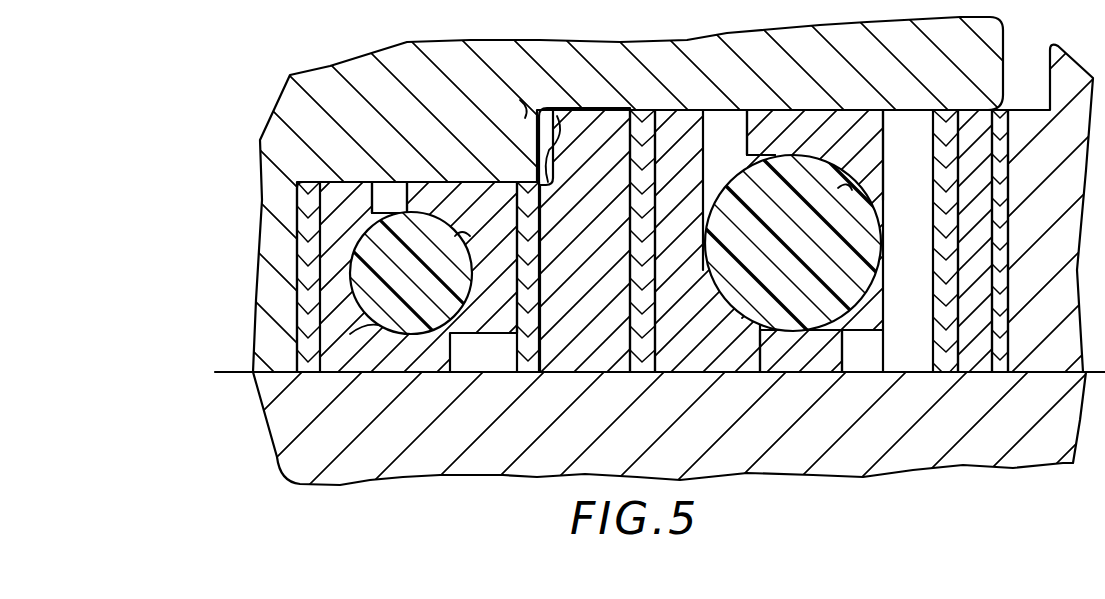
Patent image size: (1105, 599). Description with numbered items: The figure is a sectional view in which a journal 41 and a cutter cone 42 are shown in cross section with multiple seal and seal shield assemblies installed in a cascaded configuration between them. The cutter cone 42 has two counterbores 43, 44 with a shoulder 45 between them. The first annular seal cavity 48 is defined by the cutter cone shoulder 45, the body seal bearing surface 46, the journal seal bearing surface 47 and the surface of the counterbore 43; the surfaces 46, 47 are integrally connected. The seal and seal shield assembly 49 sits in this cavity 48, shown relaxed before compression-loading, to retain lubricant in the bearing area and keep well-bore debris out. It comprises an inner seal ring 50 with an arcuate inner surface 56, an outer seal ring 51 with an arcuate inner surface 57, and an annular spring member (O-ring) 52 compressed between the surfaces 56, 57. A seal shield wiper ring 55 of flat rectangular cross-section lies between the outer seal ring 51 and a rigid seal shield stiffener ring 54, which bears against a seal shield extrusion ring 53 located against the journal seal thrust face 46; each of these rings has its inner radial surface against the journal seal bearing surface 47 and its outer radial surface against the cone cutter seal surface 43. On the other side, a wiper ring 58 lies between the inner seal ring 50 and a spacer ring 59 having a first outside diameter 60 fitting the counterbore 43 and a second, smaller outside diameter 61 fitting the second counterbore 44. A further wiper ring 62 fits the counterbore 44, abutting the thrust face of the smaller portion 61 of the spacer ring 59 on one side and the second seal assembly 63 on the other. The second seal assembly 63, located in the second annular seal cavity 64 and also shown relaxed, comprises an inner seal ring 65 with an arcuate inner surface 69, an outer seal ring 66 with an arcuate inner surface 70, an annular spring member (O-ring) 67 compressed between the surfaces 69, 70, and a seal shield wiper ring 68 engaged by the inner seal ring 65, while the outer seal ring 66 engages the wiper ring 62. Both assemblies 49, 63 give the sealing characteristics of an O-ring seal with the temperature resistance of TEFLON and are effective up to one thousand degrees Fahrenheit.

The journal 41 is at (399, 466).
The cutter cone 42 is at (655, 60).
The first counterbore 43 is at (745, 120).
The second counterbore 44 is at (372, 200).
The shoulder 45 is at (520, 102).
The body seal bearing surface 46 is at (1000, 302).
The journal seal bearing surface 47 is at (912, 370).
The first annular seal cavity 48 is at (740, 378).
The seal and seal shield assembly 49 is at (704, 130).
The inner seal ring 50 is at (680, 350).
The outer seal ring 51 is at (842, 150).
The annular spring member 52 is at (790, 230).
The seal shield extrusion ring 53 is at (1000, 366).
The seal shield stiffener ring 54 is at (975, 372).
The seal shield wiper ring 55 is at (947, 376).
The arcuate inner surface of inner seal ring 56 is at (755, 322).
The arcuate inner surface of outer seal ring 57 is at (897, 150).
The wiper ring 58 is at (645, 372).
The spacer ring 59 is at (585, 372).
The first outside diameter 60 is at (582, 108).
The second outside diameter 61 is at (556, 118).
The wiper ring 62 is at (520, 372).
The second seal assembly 63 is at (470, 356).
The second annular seal cavity 64 is at (355, 185).
The inner seal ring 65 is at (358, 360).
The outer seal ring 66 is at (440, 195).
The annular spring member 67 is at (410, 260).
The seal shield wiper ring 68 is at (308, 372).
The arcuate inner surface of inner seal ring 69 is at (368, 313).
The arcuate inner surface of outer seal ring 70 is at (458, 236).